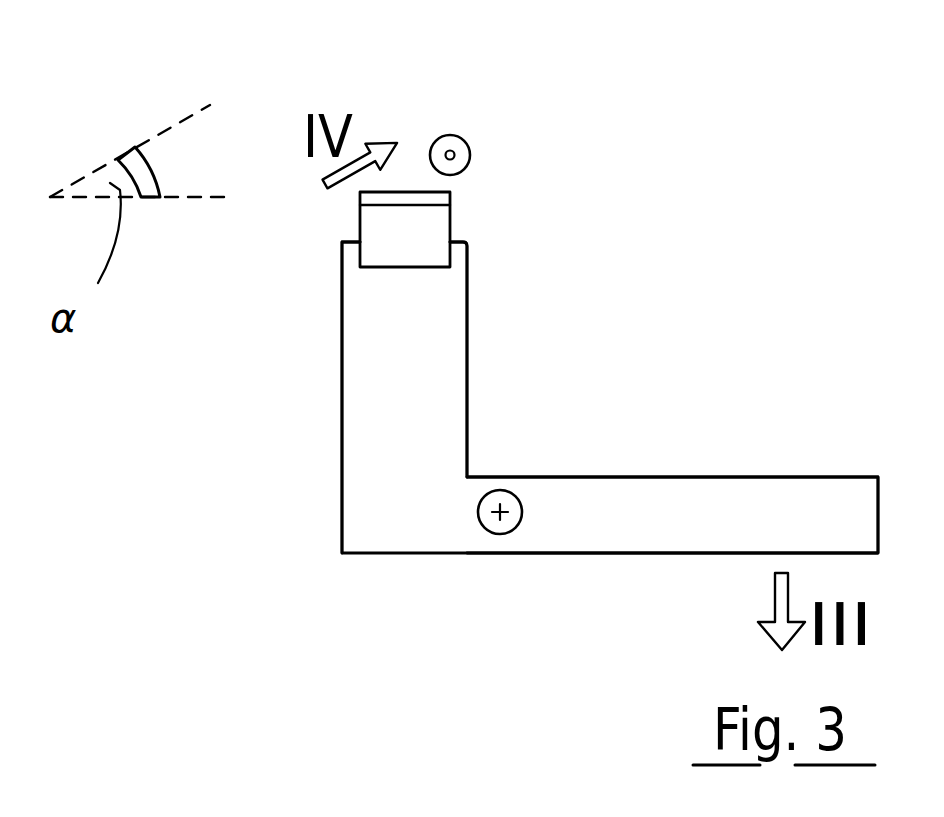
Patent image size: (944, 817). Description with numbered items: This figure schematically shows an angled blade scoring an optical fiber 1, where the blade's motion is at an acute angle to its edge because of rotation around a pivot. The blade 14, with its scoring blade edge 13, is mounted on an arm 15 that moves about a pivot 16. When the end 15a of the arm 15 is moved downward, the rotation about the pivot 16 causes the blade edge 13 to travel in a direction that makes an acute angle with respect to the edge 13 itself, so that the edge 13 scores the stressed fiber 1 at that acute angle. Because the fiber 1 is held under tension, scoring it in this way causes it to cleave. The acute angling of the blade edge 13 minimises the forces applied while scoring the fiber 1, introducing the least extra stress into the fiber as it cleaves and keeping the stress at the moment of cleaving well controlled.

The optical fiber 1 is at (470, 138).
The scoring blade edge 13 is at (415, 198).
The blade 14 is at (383, 269).
The arm 15 is at (313, 396).
The end of the arm 15a is at (709, 475).
The pivot 16 is at (490, 533).